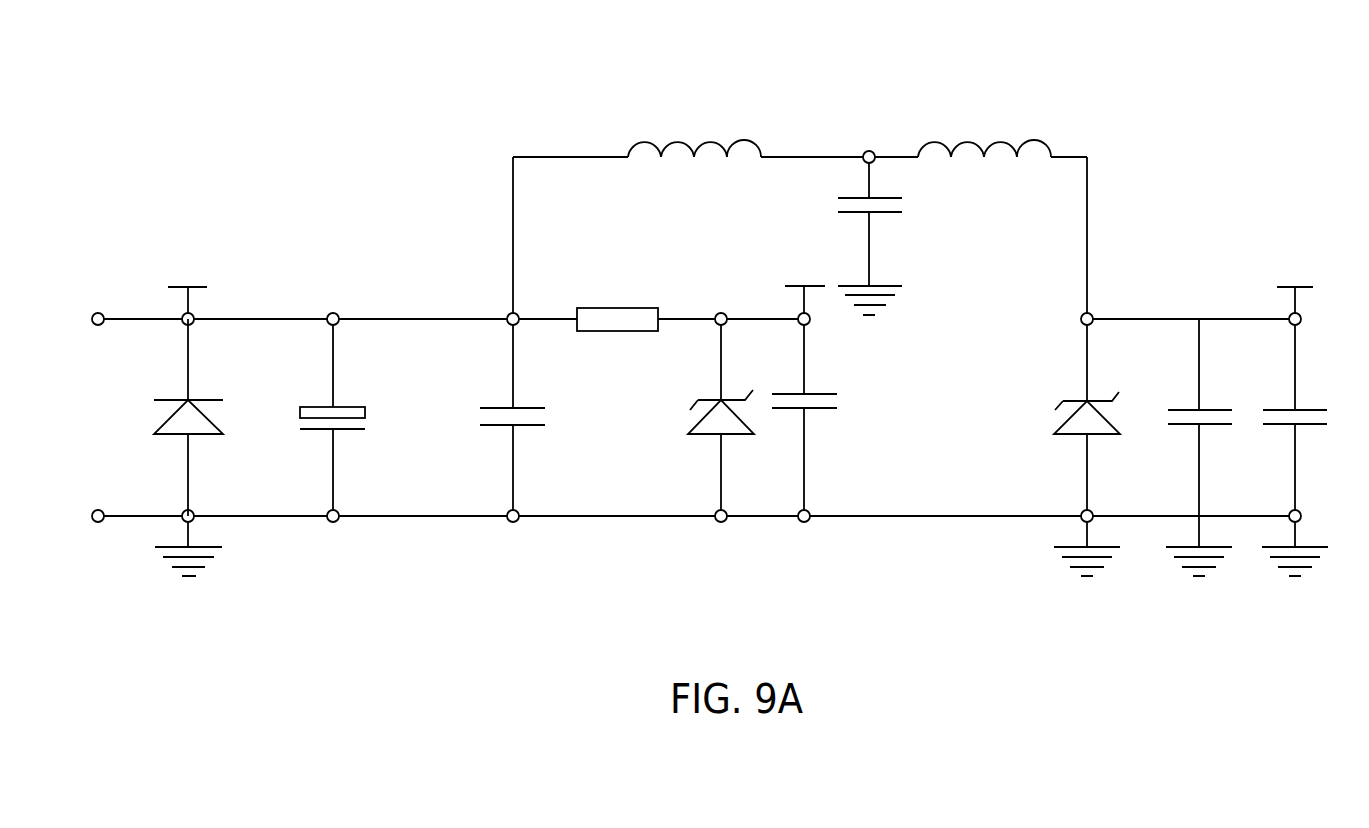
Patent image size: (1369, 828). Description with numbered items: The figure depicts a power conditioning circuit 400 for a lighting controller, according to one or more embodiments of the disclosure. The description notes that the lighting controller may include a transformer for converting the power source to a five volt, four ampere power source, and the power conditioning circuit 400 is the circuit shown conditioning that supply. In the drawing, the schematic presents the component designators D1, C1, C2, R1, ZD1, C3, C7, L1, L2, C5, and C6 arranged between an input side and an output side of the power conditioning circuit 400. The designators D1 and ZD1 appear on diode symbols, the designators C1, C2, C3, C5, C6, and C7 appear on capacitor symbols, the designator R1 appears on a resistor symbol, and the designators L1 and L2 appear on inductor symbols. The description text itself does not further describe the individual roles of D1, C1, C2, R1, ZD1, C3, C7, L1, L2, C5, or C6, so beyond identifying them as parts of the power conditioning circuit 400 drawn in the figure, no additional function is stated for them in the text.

The power conditioning circuit 400 is at (190, 95).
The diode D1 is at (222, 417).
The electrolytic capacitor C1 is at (386, 420).
The capacitor C2 is at (550, 432).
The resistor R1 is at (617, 321).
The zener diode ZD1 is at (881, 428).
The capacitor C3 is at (818, 404).
The capacitor C7 is at (848, 205).
The inductor L1 is at (705, 152).
The inductor L2 is at (977, 153).
The capacitor C5 is at (1185, 420).
The capacitor C6 is at (1277, 420).